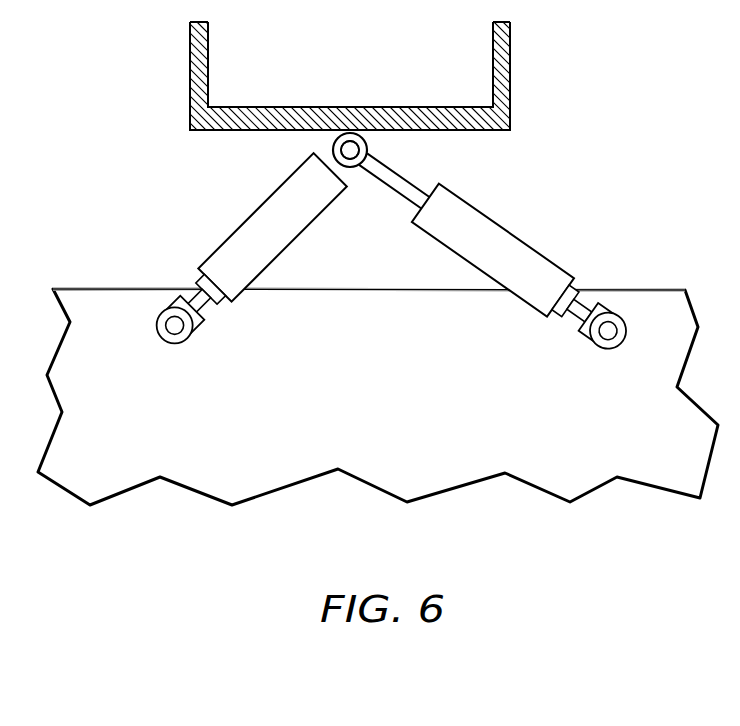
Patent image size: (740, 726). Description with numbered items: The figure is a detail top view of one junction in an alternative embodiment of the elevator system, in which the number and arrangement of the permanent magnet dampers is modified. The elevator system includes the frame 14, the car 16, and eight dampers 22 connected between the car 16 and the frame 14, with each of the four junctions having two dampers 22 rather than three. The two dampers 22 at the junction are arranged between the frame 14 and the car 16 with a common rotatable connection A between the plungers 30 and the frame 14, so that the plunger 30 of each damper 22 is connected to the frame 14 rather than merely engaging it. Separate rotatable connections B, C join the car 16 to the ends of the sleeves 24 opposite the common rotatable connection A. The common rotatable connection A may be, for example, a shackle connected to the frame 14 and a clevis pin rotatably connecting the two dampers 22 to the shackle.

The frame 14 is at (510, 78).
The car 16 is at (627, 288).
The damper 22 is at (244, 206).
The sleeve 24 is at (307, 226).
The plunger 30 is at (394, 170).
The common rotatable connection A is at (326, 147).
The rotatable connection B is at (166, 340).
The rotatable connection C is at (605, 345).